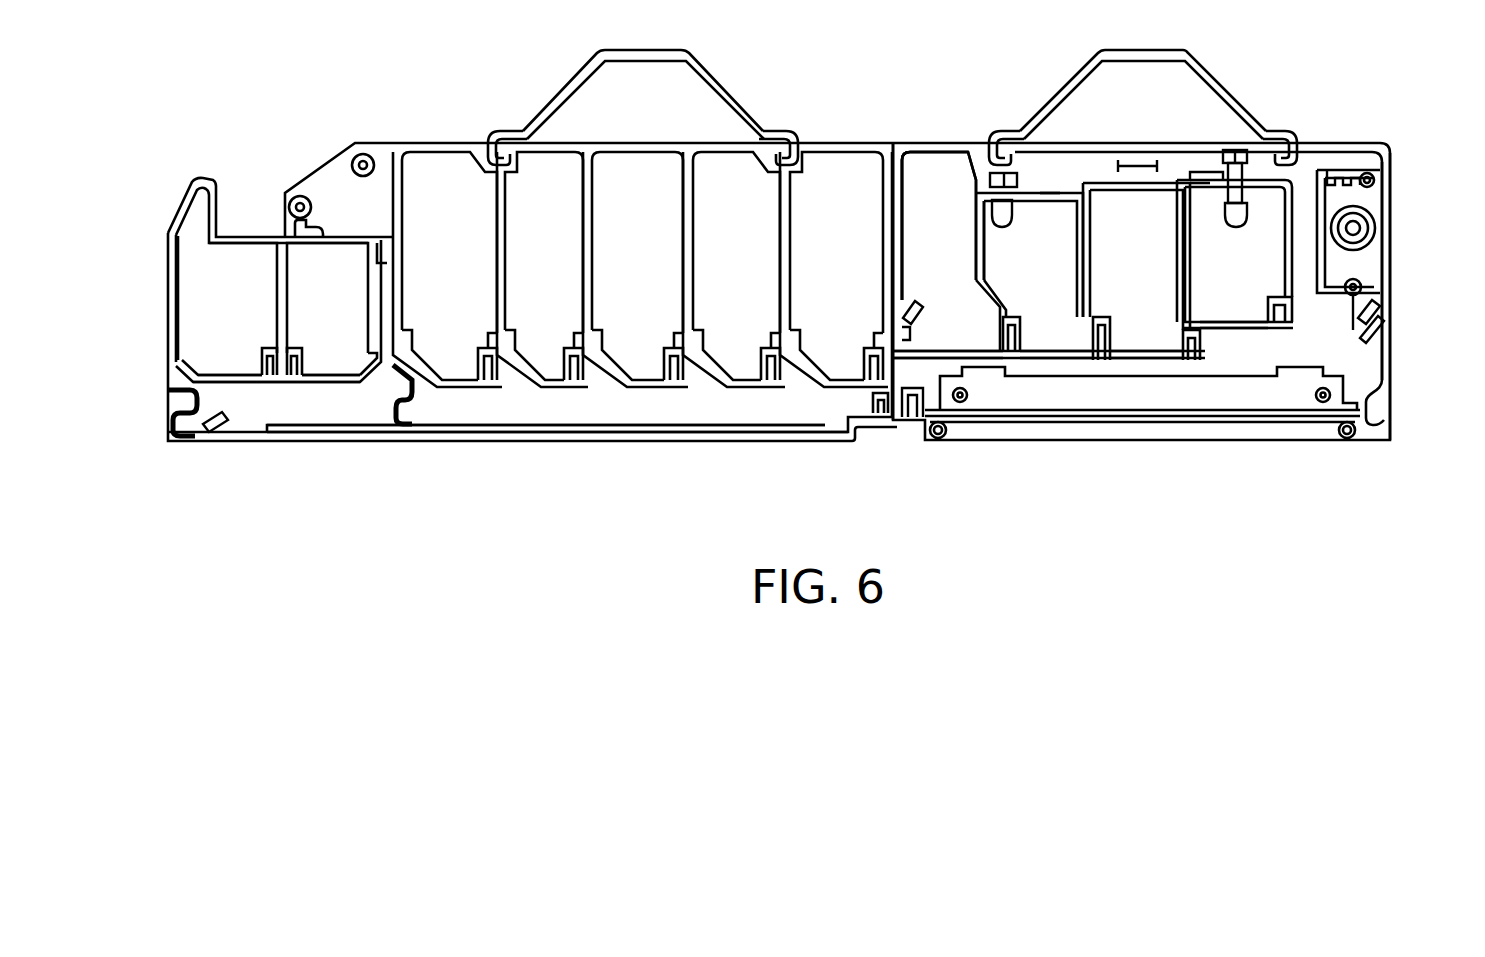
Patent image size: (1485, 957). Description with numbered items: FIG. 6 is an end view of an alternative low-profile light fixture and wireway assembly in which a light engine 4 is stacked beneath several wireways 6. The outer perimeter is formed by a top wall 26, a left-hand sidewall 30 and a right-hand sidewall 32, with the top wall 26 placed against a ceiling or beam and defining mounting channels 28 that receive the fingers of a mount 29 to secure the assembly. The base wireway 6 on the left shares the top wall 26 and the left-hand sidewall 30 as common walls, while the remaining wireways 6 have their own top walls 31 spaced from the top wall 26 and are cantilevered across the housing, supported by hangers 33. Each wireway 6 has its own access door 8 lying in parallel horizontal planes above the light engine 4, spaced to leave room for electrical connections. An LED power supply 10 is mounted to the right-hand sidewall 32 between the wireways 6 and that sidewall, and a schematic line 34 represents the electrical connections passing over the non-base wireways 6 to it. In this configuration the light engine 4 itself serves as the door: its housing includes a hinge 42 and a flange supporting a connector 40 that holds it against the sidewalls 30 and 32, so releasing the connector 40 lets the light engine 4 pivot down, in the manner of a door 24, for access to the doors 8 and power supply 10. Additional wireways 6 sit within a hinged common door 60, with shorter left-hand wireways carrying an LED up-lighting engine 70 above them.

The light engine 4 is at (1134, 395).
The wireway 6 is at (221, 310).
The access door 8 is at (320, 385).
The LED power supply 10 is at (1360, 203).
The door 24 is at (170, 419).
The top wall 26 is at (1127, 162).
The mounting channel 28 is at (490, 150).
The mount 29 is at (637, 55).
The left-hand sidewall 30 is at (905, 182).
The top wall of wireway 31 is at (1048, 193).
The right-hand sidewall 32 is at (1396, 351).
The hanger 33 is at (1006, 207).
The schematic line 34 is at (1192, 197).
The connector 40 is at (262, 364).
The hinge 42 is at (1392, 412).
The common door 60 is at (552, 441).
The LED up-lighting engine 70 is at (322, 178).